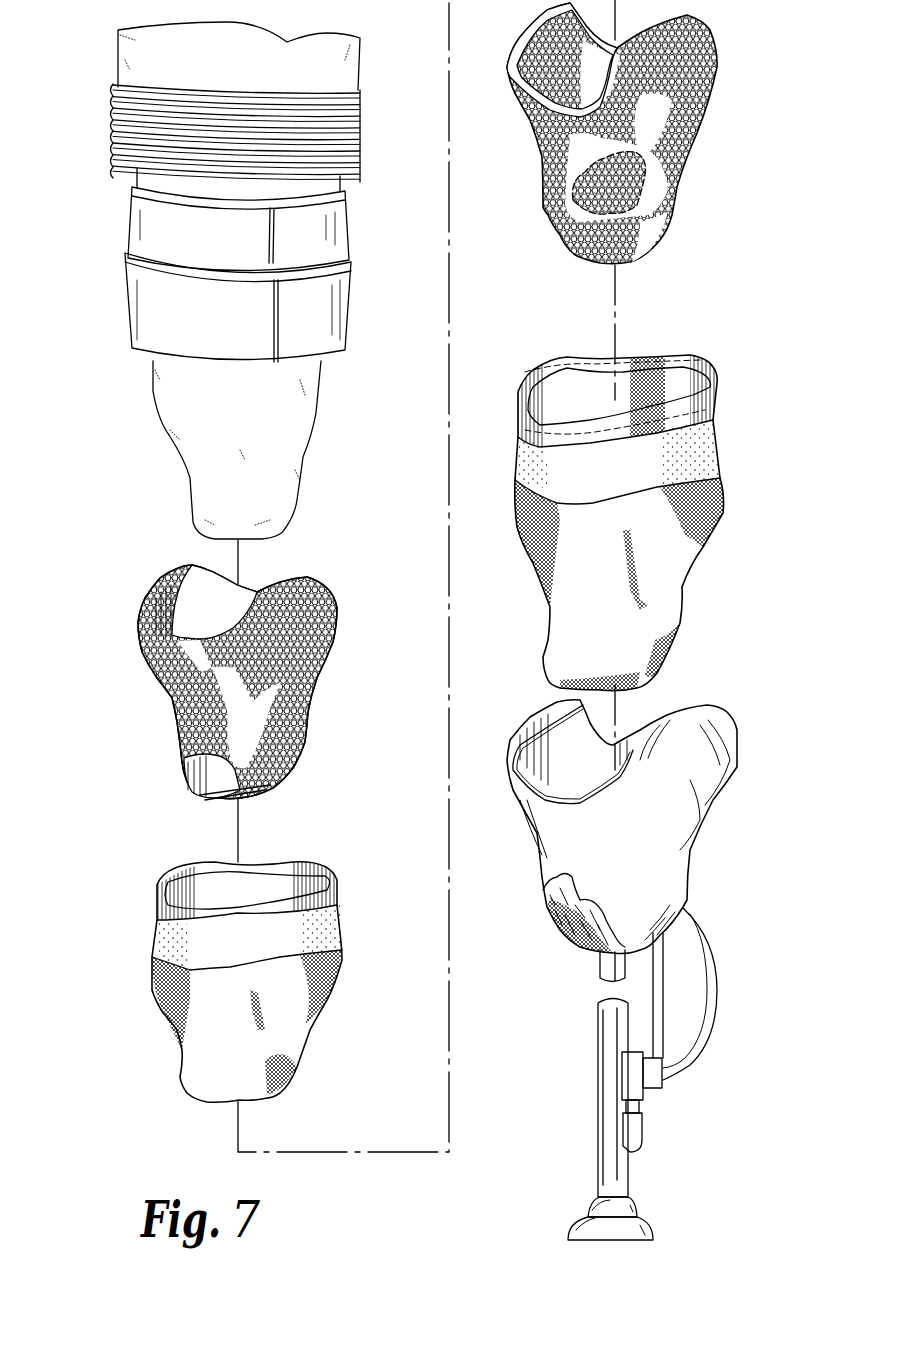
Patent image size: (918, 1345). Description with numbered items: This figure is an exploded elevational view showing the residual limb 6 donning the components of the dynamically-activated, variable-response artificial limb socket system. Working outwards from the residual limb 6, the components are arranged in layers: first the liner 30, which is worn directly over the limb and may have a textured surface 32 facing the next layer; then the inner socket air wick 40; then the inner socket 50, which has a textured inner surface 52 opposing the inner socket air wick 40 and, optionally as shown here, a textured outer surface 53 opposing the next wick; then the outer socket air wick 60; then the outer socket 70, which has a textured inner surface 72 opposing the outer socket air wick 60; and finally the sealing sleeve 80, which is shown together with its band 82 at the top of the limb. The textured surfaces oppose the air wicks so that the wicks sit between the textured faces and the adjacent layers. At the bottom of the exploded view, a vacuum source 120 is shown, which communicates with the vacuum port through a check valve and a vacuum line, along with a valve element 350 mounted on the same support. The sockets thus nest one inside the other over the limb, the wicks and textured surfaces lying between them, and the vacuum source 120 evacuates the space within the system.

The residual limb 6 is at (306, 530).
The upper band 82 is at (131, 163).
The sealing sleeve 80 is at (173, 333).
The liner 30 is at (246, 682).
The textured surface 32 is at (320, 620).
The inner socket air wick 40 is at (152, 985).
The inner socket 50 is at (623, 133).
The textured inner surface 52 is at (605, 193).
The textured outer surface 53 is at (700, 84).
The outer socket air wick 60 is at (718, 483).
The outer socket 70 is at (638, 841).
The textured inner surface 72 is at (560, 880).
The vacuum source 120 is at (635, 1073).
The valve element 350 is at (635, 1130).